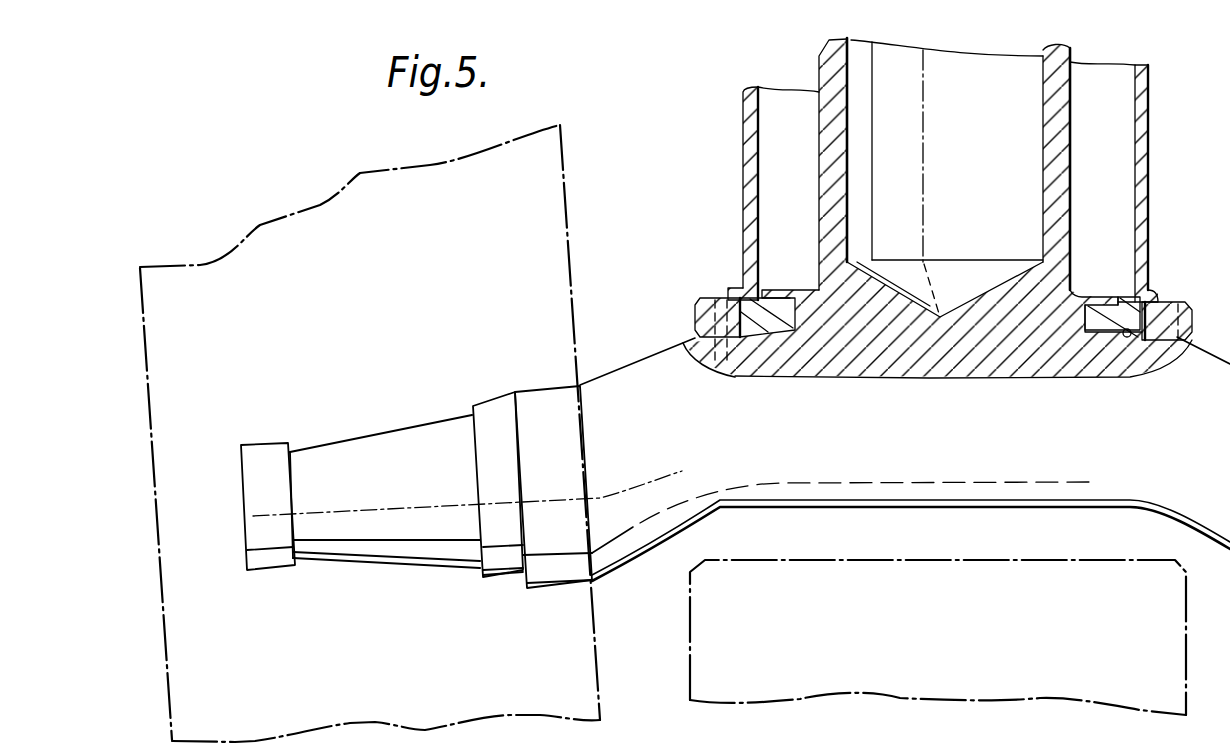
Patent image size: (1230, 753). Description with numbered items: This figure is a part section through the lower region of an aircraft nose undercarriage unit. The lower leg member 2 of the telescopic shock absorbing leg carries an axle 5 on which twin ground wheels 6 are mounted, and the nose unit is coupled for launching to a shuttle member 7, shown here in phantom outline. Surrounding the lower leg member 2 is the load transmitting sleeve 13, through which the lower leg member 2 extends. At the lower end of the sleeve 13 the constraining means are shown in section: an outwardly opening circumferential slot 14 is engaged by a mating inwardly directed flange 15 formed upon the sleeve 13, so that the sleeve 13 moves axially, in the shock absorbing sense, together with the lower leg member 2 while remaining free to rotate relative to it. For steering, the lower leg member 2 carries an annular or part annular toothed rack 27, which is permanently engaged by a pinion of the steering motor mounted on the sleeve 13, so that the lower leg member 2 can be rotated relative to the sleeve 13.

The lower leg member 2 is at (862, 432).
The axle 5 is at (540, 403).
The ground wheels 6 is at (540, 218).
The shuttle member 7 is at (1018, 562).
The load transmitting sleeve 13 is at (743, 190).
The circumferential slot 14 is at (788, 318).
The flange 15 is at (786, 306).
The toothed rack 27 is at (695, 312).